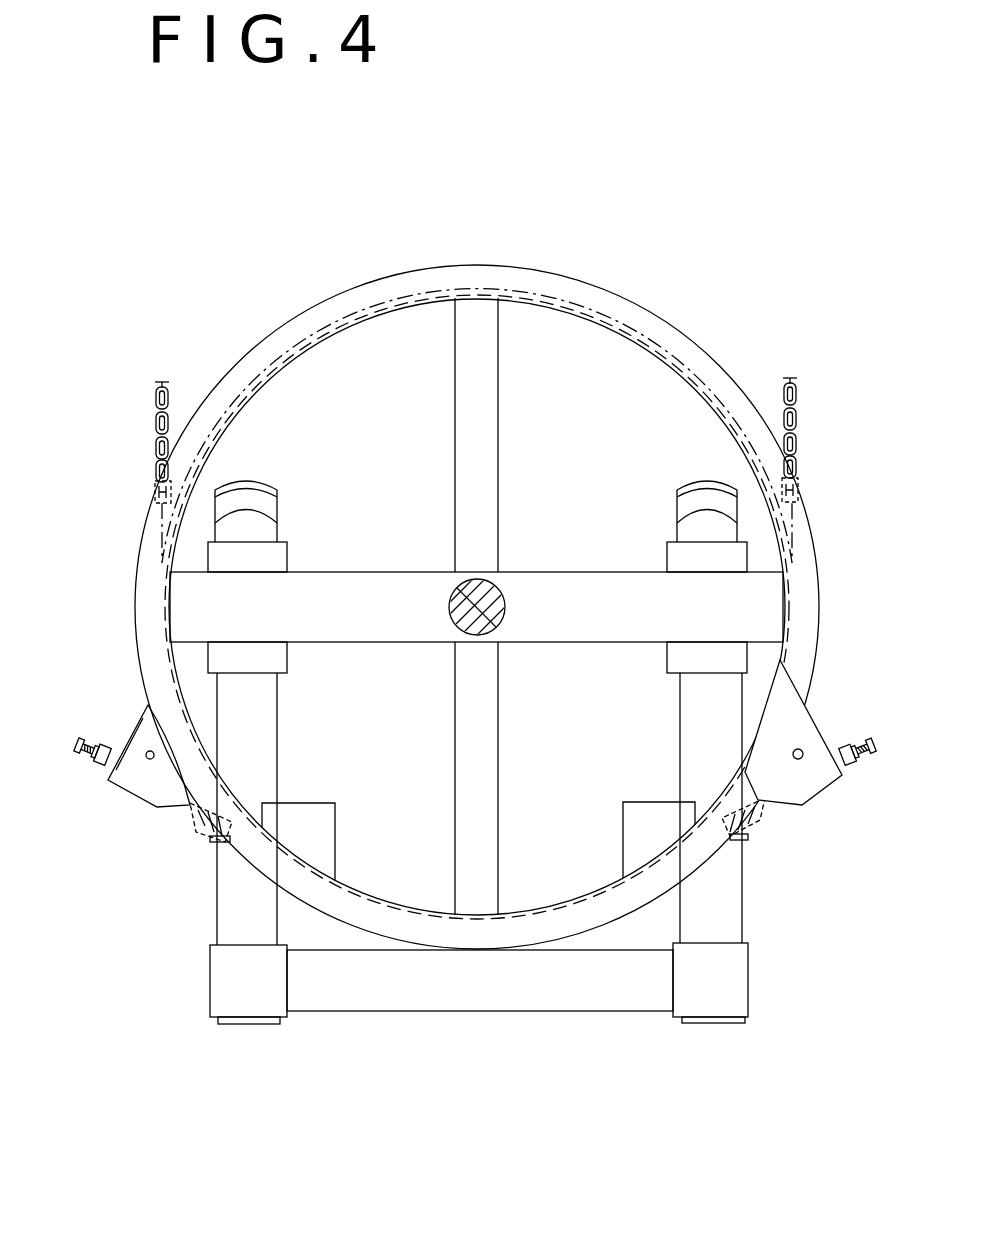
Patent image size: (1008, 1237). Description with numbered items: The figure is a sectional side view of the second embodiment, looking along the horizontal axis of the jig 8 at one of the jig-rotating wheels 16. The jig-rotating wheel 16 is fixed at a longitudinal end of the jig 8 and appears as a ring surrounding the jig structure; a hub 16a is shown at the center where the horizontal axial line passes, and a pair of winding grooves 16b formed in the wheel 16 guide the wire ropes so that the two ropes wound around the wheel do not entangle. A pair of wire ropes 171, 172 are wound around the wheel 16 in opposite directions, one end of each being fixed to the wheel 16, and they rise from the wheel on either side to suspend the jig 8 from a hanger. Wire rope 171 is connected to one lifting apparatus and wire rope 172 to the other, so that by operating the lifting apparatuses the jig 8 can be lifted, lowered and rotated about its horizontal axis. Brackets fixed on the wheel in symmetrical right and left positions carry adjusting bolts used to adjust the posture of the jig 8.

The jig 8 is at (510, 992).
The jig-rotating wheel 16 is at (410, 285).
The hub shaft 16a is at (496, 597).
The winding groove 16b is at (305, 343).
The wire rope 171 is at (155, 423).
The wire rope 172 is at (797, 393).